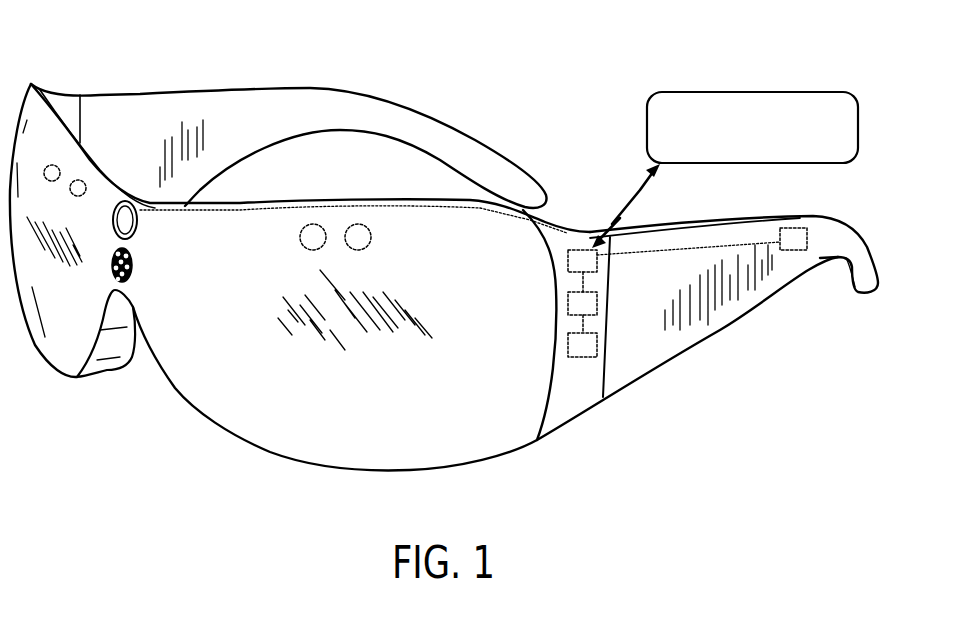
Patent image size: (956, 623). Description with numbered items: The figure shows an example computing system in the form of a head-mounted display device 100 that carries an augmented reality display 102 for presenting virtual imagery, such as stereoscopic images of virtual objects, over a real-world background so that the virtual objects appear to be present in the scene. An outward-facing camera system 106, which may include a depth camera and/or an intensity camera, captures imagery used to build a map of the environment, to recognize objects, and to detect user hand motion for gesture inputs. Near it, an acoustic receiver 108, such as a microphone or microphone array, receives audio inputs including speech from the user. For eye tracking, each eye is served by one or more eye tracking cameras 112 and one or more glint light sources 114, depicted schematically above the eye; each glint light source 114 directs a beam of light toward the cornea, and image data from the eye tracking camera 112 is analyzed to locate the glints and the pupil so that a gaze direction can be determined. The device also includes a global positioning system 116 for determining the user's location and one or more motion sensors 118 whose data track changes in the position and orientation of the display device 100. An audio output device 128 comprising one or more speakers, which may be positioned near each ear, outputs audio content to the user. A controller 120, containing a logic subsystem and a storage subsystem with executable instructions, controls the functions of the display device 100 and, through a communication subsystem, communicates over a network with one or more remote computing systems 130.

The head-mounted display device 100 is at (170, 56).
The augmented reality display 102 is at (474, 437).
The outward-facing camera system 106 is at (152, 224).
The acoustic receiver 108 is at (148, 273).
The eye tracking camera 112 is at (80, 175).
The glint light source 114 is at (52, 162).
The global positioning system 116 is at (598, 303).
The motion sensor 118 is at (598, 348).
The controller 120 is at (570, 248).
The audio output device 128 is at (782, 228).
The remote computing system 130 is at (815, 92).